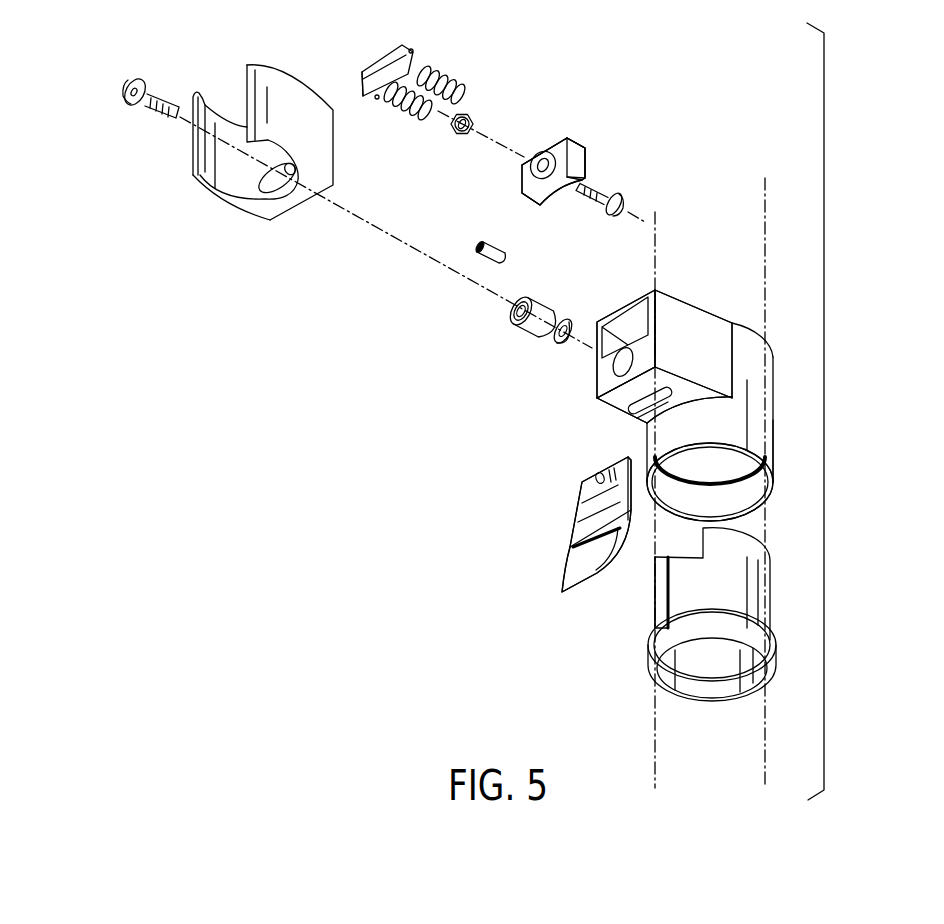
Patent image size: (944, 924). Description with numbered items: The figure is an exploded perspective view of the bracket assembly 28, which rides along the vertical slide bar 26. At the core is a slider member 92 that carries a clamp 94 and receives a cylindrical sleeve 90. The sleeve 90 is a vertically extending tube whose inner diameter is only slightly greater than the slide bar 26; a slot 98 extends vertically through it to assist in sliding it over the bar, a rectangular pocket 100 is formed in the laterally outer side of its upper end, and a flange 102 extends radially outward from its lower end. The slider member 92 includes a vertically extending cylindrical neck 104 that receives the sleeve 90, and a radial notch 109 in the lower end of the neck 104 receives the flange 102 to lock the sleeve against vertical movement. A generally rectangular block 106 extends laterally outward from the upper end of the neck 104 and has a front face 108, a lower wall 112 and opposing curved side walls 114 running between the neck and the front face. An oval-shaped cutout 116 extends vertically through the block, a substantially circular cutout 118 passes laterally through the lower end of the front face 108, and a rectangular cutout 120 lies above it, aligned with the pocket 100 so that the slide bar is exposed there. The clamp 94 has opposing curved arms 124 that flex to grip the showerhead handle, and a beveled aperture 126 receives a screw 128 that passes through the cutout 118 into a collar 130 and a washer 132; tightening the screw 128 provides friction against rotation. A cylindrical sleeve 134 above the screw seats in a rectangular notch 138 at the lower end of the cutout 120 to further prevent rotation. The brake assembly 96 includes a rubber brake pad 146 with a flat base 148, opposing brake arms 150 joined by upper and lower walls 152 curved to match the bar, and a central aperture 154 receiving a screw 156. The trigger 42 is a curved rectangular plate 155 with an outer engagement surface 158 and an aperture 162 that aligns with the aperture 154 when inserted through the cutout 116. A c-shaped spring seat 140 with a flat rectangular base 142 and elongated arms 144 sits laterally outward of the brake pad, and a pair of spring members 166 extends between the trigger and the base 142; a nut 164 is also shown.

The slide bar 26 is at (766, 222).
The bracket assembly 28 is at (490, 391).
The trigger 42 is at (553, 595).
The cylindrical sleeve 90 is at (774, 597).
The slider member 92 is at (780, 395).
The clamp 94 is at (200, 203).
The brake assembly 96 is at (574, 80).
The slot 98 is at (667, 626).
The rectangular pocket 100 is at (655, 566).
The flange 102 is at (773, 650).
The cylindrical neck 104 is at (778, 460).
The rectangular block 106 is at (687, 299).
The front face 108 is at (602, 381).
The radial notch 109 is at (745, 502).
The lower wall 112 is at (607, 406).
The curved side walls 114 is at (717, 325).
The oval-shaped cutout 116 is at (697, 393).
The circular cutout 118 is at (597, 370).
The rectangular cutout 120 is at (628, 303).
The curved arms 124 is at (277, 64).
The beveled aperture 126 is at (255, 183).
The screw 128 is at (130, 107).
The collar 130 is at (510, 312).
The washer 132 is at (557, 347).
The cylindrical sleeve 134 is at (493, 241).
The rectangular notch 138 is at (633, 352).
The spring seat 140 is at (371, 56).
The base 142 is at (363, 77).
The elongated arms 144 is at (412, 51).
The brake pad 146 is at (576, 138).
The flat base 148 is at (558, 140).
The brake arms 150 is at (580, 157).
The upper and lower walls 152 is at (528, 202).
The aperture 154 is at (537, 160).
The rectangular plate 155 is at (572, 563).
The screw 156 is at (620, 193).
The laterally outer surface 158 is at (588, 507).
The aperture 162 is at (599, 474).
The nut 164 is at (465, 134).
The spring members 166 is at (437, 69).